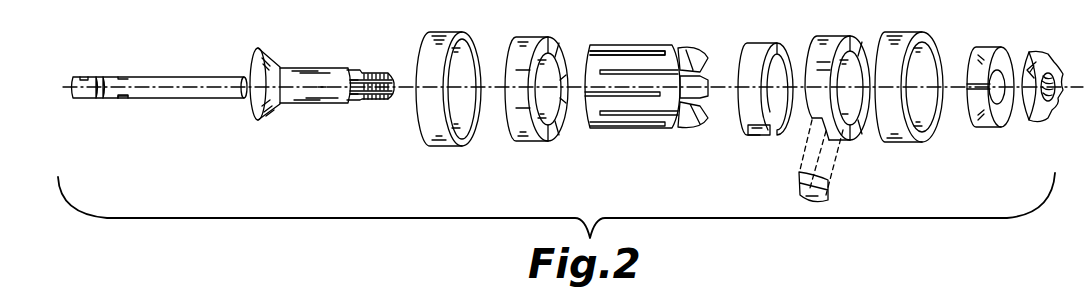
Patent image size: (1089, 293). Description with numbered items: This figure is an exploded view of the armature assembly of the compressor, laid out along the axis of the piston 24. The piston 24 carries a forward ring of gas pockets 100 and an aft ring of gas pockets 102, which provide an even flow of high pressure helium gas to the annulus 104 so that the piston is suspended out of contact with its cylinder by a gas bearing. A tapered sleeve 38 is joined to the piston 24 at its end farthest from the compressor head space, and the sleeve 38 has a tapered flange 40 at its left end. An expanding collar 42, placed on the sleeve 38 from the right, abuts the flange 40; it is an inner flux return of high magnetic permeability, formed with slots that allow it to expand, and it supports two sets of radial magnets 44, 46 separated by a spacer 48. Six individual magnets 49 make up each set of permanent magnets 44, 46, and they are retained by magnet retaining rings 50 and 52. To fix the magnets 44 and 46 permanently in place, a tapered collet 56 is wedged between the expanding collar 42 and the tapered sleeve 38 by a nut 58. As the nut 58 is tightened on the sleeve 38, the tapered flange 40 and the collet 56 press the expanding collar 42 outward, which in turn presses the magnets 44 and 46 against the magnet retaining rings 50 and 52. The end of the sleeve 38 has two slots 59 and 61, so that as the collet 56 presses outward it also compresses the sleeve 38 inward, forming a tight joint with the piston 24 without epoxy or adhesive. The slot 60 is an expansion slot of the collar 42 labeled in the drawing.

The piston 24 is at (192, 97).
The sleeve 38 is at (327, 93).
The tapered flange 40 is at (278, 63).
The expanding collar 42 is at (677, 125).
The radial magnets 44 is at (560, 128).
The radial magnets 46 is at (855, 128).
The spacer 48 is at (759, 128).
The magnets 49 is at (800, 194).
The magnet retaining ring 50 is at (470, 142).
The magnet retaining ring 52 is at (925, 141).
The tapered collet 56 is at (1000, 128).
The nut 58 is at (1053, 122).
The slot 59 is at (395, 79).
The slot 60 is at (638, 97).
The slot 61 is at (381, 101).
The forward ring of gas pockets 100 is at (86, 79).
The aft ring of gas pockets 102 is at (122, 99).
The annulus 104 is at (100, 78).